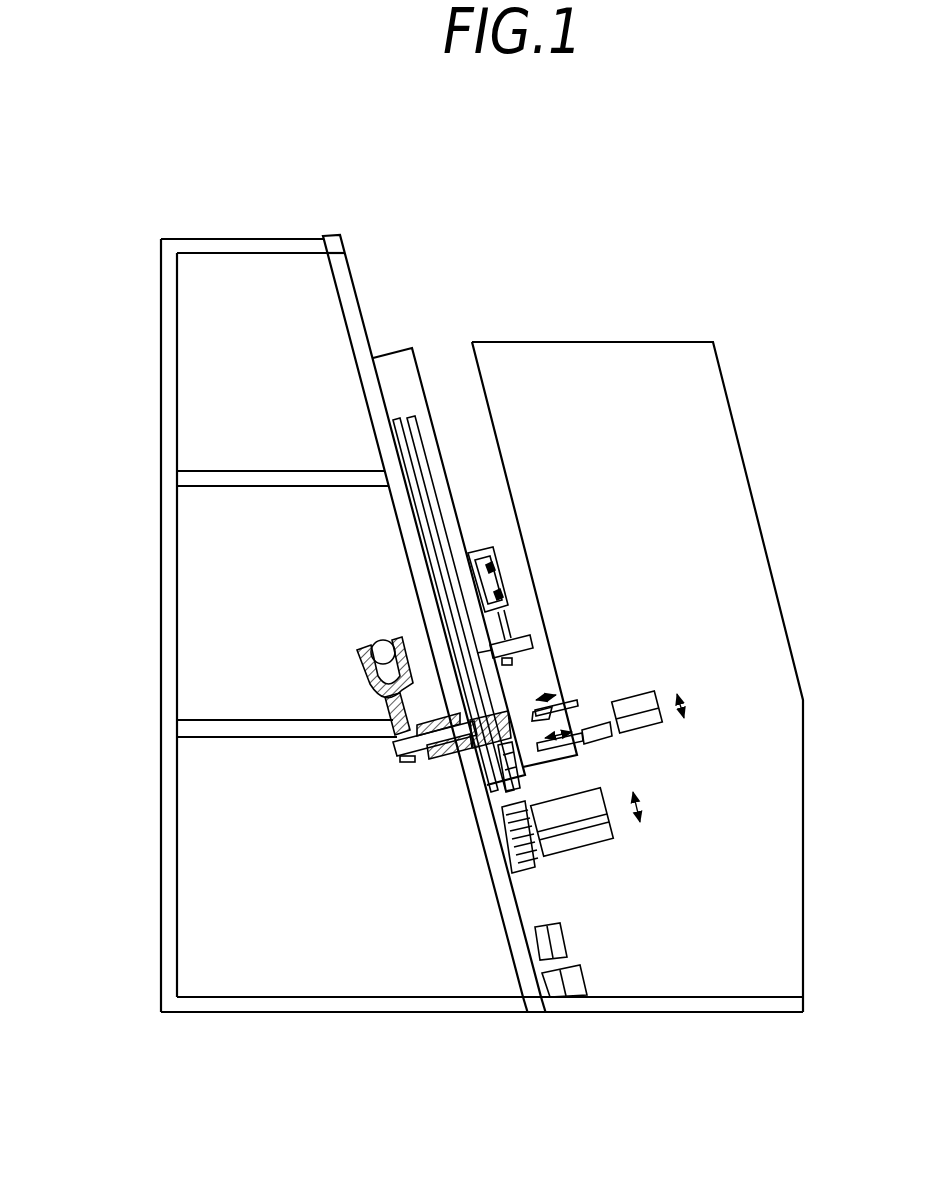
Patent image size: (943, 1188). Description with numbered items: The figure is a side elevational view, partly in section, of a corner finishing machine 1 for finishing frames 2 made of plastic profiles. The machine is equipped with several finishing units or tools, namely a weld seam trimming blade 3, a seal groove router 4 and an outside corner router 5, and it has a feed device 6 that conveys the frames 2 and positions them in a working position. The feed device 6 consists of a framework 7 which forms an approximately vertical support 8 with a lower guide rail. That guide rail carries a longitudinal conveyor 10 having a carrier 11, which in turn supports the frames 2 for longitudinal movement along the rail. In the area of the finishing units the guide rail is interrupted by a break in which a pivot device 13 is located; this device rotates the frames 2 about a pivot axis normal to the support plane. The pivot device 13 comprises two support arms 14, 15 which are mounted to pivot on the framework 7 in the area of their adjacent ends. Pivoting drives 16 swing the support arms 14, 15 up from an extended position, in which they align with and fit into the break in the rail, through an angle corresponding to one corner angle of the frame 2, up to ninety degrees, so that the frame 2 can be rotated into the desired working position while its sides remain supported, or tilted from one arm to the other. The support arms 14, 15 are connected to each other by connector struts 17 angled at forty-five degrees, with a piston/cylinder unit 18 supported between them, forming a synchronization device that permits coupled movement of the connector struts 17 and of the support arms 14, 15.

The corner finishing machine 1 is at (624, 320).
The frame 2 is at (422, 487).
The weld seam trimming blade 3 is at (571, 690).
The seal groove router 4 is at (636, 706).
The outside corner router 5 is at (605, 852).
The feed device 6 is at (158, 345).
The framework 7 is at (170, 583).
The support 8 is at (358, 293).
The longitudinal conveyor 10 is at (496, 575).
The carrier 11 is at (512, 630).
The pivot device 13 is at (335, 669).
The support arm 14 is at (473, 755).
The support arm 15 is at (398, 383).
The pivoting drive 16 is at (517, 773).
The connector strut 17 is at (367, 680).
The piston/cylinder unit 18 is at (376, 661).